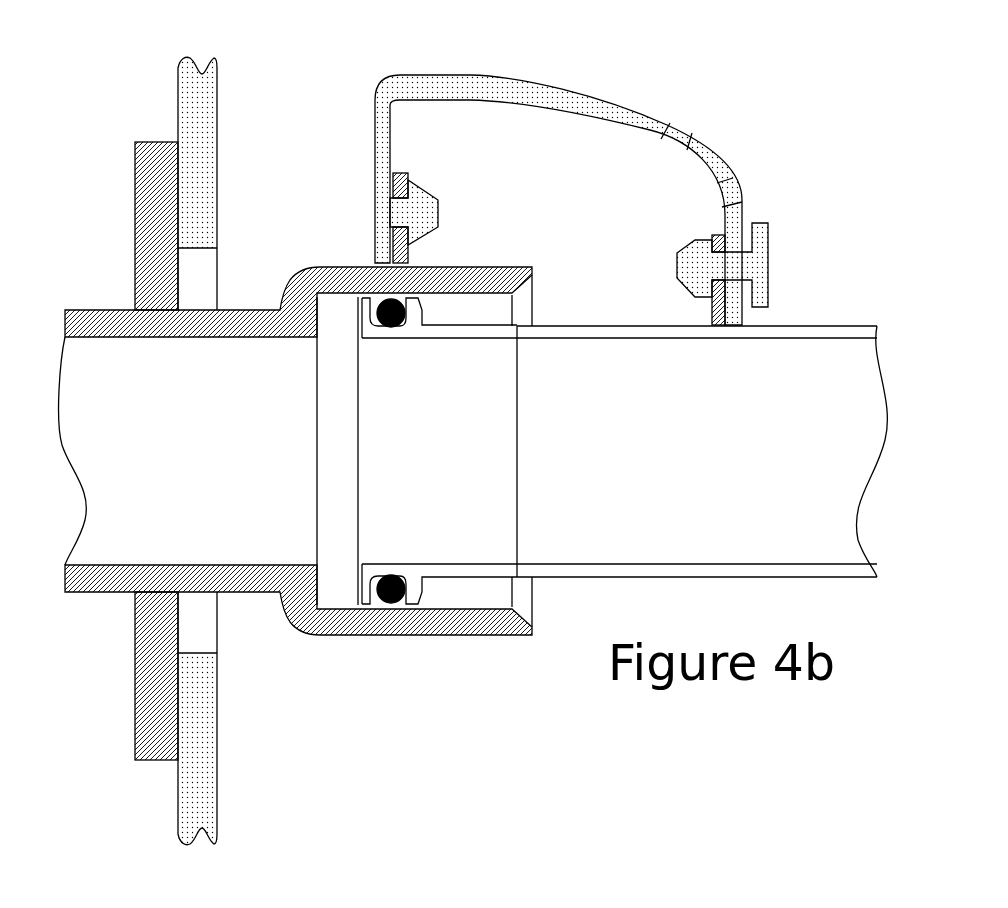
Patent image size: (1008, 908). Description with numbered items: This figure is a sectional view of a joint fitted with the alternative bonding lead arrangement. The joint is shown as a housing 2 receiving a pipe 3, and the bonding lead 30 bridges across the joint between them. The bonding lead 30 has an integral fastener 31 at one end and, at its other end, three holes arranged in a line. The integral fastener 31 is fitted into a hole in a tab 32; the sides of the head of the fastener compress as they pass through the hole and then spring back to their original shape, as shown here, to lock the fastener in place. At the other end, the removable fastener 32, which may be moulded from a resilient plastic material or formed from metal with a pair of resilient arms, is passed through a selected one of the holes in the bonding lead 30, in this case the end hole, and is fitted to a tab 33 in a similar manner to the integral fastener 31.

The housing 2 is at (402, 635).
The pipe 3 is at (478, 555).
The bonding lead 30 is at (547, 88).
The integral fastener 31 is at (440, 215).
The fastener 32 is at (400, 172).
The tab 33 is at (712, 235).